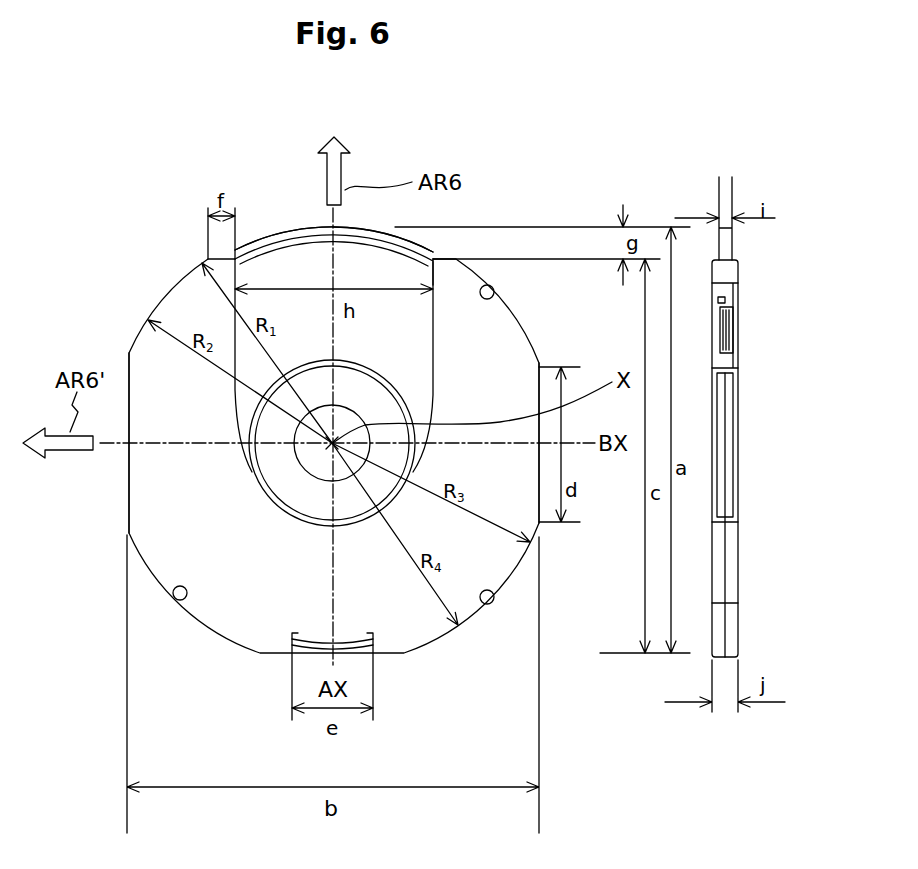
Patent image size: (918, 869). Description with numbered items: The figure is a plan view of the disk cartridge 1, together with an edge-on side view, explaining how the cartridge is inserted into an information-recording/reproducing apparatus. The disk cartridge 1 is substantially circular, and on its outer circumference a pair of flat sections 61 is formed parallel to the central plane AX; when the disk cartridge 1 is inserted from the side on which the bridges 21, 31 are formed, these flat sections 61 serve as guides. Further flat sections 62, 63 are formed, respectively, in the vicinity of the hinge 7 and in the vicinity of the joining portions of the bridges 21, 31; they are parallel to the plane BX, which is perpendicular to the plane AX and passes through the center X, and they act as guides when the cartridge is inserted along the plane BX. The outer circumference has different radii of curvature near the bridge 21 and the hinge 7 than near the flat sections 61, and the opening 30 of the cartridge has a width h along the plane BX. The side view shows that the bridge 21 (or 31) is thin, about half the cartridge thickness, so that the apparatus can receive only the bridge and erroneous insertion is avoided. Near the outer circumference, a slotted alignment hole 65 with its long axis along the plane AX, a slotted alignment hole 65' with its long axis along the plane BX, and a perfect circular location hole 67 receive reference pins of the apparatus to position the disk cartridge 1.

The disk cartridge 1 is at (118, 183).
The hinge 7 is at (366, 656).
The bridge 21 is at (400, 232).
The bridge 31 is at (334, 239).
The opening 30 is at (243, 408).
The flat sections 61 is at (541, 367).
The flat section 62 is at (313, 656).
The flat sections 63 is at (213, 258).
The alignment hole 65 is at (545, 245).
The alignment hole 65' is at (113, 638).
The location hole 67 is at (492, 603).